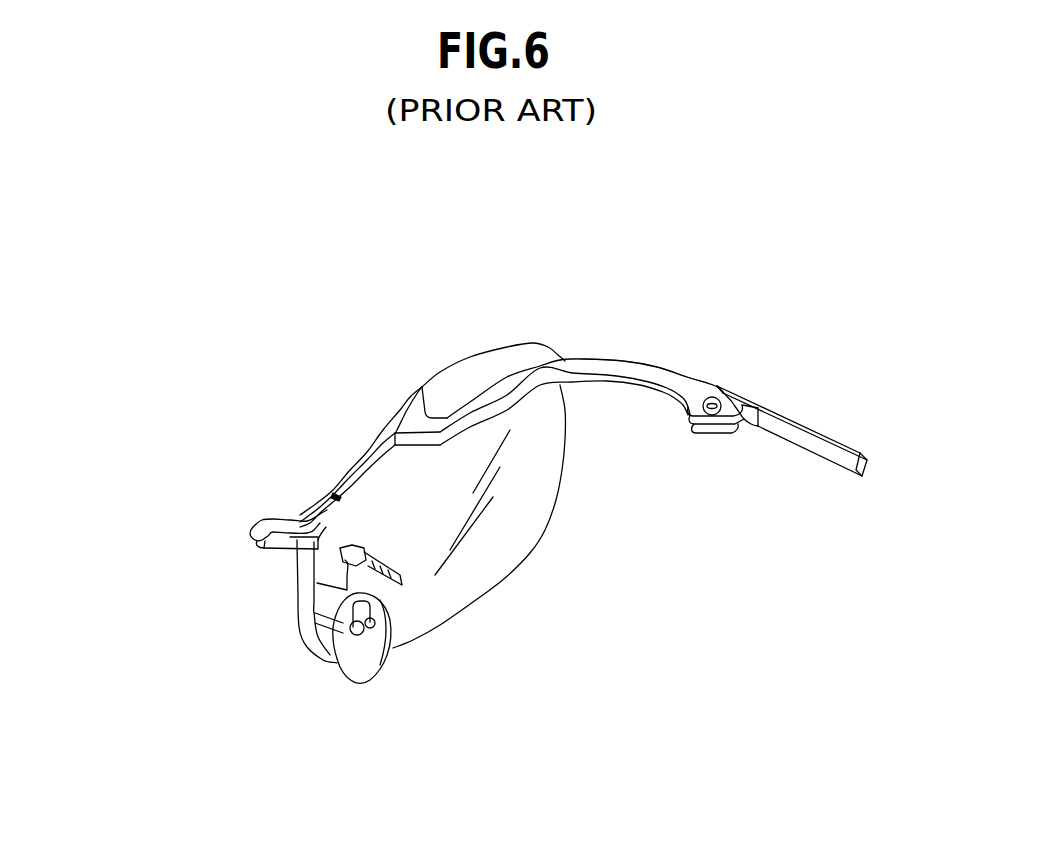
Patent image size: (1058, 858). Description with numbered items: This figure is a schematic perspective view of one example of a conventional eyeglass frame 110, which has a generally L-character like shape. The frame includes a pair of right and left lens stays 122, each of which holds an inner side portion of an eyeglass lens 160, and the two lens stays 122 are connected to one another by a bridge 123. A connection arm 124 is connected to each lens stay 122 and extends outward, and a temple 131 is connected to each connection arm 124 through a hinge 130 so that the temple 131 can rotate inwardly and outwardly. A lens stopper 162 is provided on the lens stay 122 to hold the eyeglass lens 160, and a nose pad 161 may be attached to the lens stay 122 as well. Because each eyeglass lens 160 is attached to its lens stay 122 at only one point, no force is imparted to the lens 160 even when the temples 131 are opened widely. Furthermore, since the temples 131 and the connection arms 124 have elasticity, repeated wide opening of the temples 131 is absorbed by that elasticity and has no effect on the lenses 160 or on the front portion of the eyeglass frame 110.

The eyeglass frame 110 is at (246, 315).
The lens stay 122 is at (356, 450).
The bridge 123 is at (263, 520).
The connection arm 124 is at (613, 358).
The hinge 130 is at (710, 437).
The temple 131 is at (810, 421).
The eyeglass lens 160 is at (512, 543).
The nose pad 161 is at (349, 672).
The lens stopper 162 is at (345, 571).